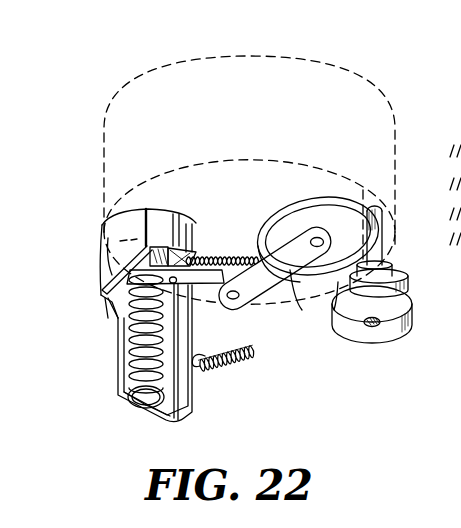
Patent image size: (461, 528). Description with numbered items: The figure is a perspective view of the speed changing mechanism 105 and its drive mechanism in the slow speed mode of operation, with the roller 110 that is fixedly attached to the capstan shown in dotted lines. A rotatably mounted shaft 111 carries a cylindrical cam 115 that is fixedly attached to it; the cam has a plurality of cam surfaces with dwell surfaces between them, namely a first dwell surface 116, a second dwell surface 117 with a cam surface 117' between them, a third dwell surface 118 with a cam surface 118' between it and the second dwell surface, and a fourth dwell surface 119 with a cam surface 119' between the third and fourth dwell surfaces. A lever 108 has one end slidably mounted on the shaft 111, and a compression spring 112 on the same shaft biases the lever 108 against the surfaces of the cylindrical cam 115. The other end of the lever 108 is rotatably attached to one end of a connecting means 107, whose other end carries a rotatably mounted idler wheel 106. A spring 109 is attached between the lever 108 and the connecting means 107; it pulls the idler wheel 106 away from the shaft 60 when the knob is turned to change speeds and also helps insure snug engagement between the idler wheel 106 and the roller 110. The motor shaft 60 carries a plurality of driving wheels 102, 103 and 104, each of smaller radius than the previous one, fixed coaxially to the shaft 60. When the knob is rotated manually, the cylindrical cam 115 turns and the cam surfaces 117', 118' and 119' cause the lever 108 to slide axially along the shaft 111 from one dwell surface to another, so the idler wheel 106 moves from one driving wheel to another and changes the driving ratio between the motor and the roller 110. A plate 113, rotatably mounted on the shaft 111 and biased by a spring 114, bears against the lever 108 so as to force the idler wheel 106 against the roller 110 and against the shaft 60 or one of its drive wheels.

The shaft 60 is at (383, 262).
The driving wheel 102 is at (393, 324).
The driving wheel 103 is at (397, 285).
The driving wheel 104 is at (388, 270).
The speed changing mechanism 105 is at (258, 310).
The idler wheel 106 is at (304, 205).
The connecting means 107 is at (298, 282).
The lever 108 is at (205, 302).
The spring 109 is at (229, 253).
The roller 110 is at (346, 77).
The shaft 111 is at (135, 378).
The compression spring 112 is at (124, 388).
The plate 113 is at (155, 410).
The spring 114 is at (230, 372).
The cylindrical cam 115 is at (103, 233).
The first dwell surface 116 is at (196, 254).
The second dwell surface 117 is at (175, 213).
The cam surface 117' is at (209, 209).
The third dwell surface 118 is at (134, 273).
The cam surface 118' is at (99, 265).
The fourth dwell surface 119 is at (118, 353).
The cam surface 119' is at (80, 301).